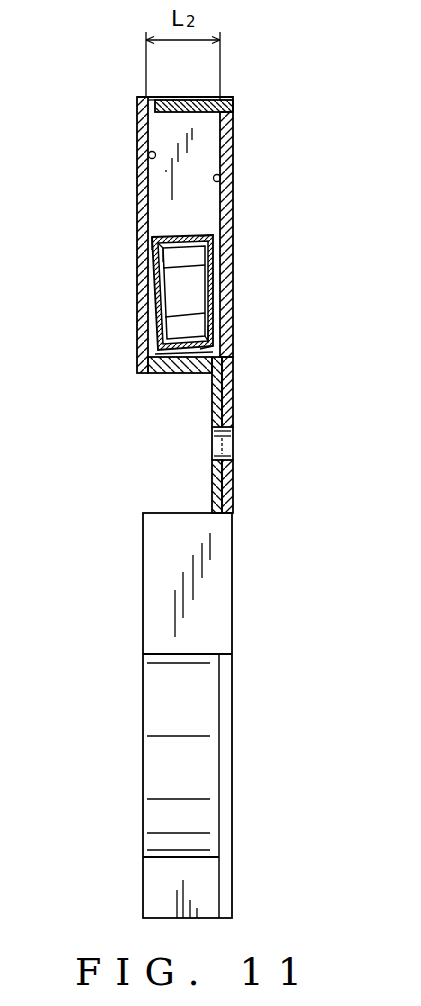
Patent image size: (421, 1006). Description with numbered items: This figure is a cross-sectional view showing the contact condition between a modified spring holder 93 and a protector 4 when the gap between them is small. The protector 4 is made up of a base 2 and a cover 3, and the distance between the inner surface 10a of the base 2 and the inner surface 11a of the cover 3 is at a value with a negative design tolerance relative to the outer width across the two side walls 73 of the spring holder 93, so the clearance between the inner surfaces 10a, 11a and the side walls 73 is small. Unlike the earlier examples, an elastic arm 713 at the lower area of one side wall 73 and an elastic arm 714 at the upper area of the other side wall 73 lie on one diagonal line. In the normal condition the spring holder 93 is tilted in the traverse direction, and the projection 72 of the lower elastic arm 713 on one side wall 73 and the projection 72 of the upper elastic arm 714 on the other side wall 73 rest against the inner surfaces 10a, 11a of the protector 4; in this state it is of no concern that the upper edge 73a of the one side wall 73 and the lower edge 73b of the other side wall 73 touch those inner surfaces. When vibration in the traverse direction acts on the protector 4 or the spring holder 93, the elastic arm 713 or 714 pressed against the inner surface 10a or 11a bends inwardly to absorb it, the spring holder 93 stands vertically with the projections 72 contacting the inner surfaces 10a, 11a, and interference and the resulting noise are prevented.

The base 2 is at (237, 138).
The cover 3 is at (186, 97).
The protector 4 is at (305, 65).
The inner surface of the base 10a is at (221, 178).
The inner surface of the cover 11a is at (148, 154).
The spring holder 93 is at (207, 235).
The projection 72 is at (165, 316).
The side wall 73 is at (157, 283).
The elastic arm 713 is at (214, 318).
The elastic arm 714 is at (157, 258).
The upper edge of the one side wall 73a is at (150, 233).
The lower edge of the other side wall 73b is at (214, 347).